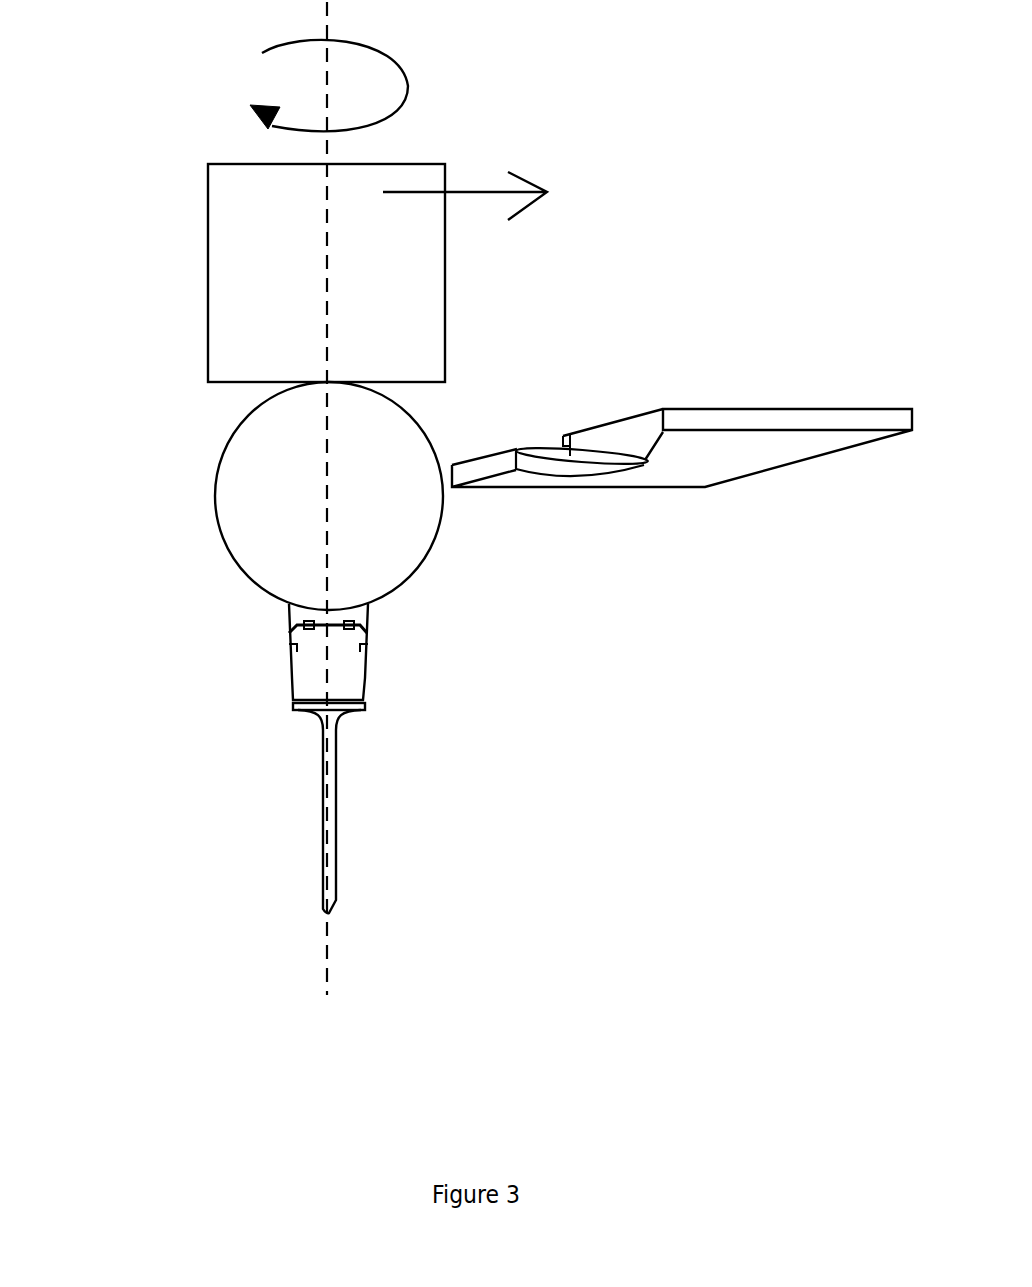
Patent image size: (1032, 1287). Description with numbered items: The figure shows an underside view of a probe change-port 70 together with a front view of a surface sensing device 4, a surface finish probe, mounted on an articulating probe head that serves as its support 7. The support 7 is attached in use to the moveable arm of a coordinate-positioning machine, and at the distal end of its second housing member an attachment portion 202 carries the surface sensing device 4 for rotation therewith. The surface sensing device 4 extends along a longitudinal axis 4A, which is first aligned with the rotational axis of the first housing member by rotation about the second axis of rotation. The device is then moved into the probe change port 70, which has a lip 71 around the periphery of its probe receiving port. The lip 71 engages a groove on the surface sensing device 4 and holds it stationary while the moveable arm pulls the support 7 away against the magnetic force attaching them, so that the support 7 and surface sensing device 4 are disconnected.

The support 7 is at (169, 625).
The attachment portion 202 is at (368, 615).
The surface sensing device 4 is at (432, 628).
The longitudinal axis 4A is at (326, 539).
The probe change-port 70 is at (782, 450).
The lip 71 is at (517, 452).